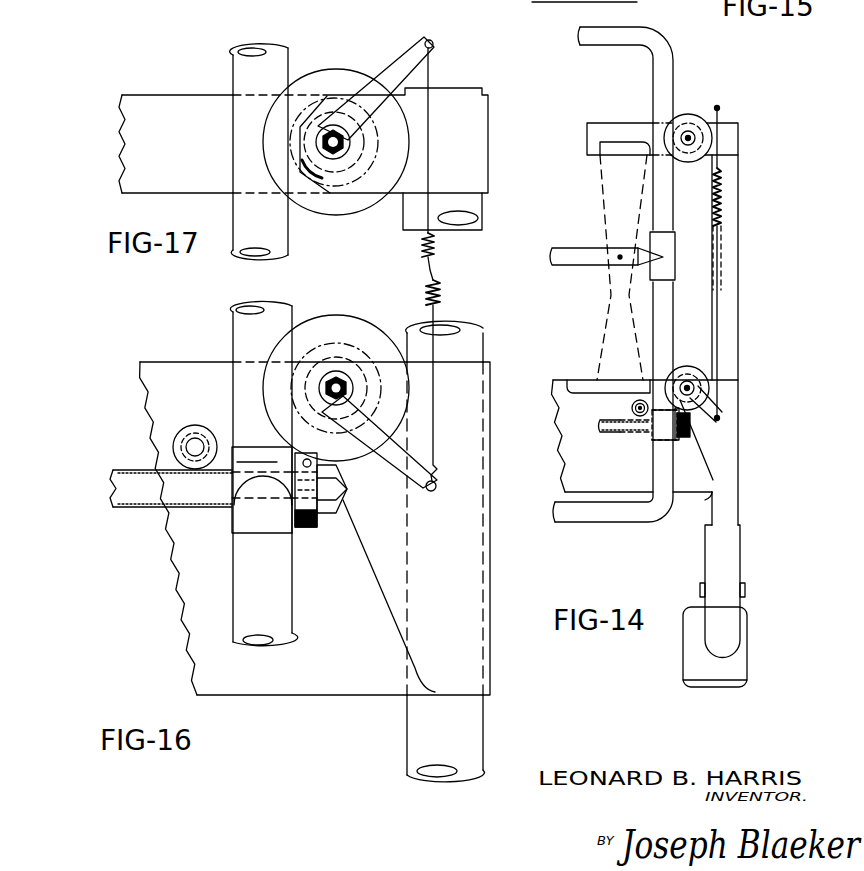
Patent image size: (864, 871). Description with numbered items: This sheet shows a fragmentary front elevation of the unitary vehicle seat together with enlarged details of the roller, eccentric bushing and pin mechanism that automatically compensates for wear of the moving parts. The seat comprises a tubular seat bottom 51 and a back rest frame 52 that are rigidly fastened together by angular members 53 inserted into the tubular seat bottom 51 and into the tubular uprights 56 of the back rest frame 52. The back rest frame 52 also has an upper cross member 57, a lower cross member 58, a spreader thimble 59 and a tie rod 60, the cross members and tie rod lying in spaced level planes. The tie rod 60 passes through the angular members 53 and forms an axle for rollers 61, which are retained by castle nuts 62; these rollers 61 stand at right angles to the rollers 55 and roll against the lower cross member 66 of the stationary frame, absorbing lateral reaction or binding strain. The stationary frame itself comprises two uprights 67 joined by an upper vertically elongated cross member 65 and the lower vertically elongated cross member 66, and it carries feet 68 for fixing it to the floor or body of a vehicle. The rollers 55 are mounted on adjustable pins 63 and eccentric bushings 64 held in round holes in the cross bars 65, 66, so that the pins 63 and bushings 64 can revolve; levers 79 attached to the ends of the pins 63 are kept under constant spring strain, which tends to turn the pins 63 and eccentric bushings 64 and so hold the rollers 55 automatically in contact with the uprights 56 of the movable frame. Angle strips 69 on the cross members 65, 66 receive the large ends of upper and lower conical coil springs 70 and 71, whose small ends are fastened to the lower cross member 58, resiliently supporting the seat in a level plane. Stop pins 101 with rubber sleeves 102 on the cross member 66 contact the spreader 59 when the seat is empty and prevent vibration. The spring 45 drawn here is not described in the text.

In FIG. 16, the spring 45 is at (436, 289).
In FIG. 14, the spring 45 is at (713, 330).
In FIG. 16, the tubular seat bottom 51 is at (288, 590).
In FIG. 14, the tubular seat bottom 51 is at (610, 515).
In FIG. 14, the back rest frame 52 is at (626, 75).
In FIG. 16, the angular members 53 is at (270, 455).
In FIG. 14, the angular members 53 is at (652, 437).
In FIG. 17, the rollers 55 is at (325, 73).
In FIG. 16, the rollers 55 is at (317, 323).
In FIG. 14, the rollers 55 is at (677, 128).
In FIG. 17, the tubular uprights 56 is at (270, 65).
In FIG. 16, the tubular uprights 56 is at (237, 343).
In FIG. 14, the tubular uprights 56 is at (687, 287).
In FIG. 14, the upper cross member 57 is at (628, 35).
In FIG. 14, the lower cross member 58 is at (572, 260).
In FIG. 16, the spreader thimble 59 is at (153, 510).
In FIG. 14, the spreader thimble 59 is at (627, 435).
In FIG. 16, the tie rod 60 is at (170, 487).
In FIG. 14, the tie rod 60 is at (602, 428).
In FIG. 16, the rollers 61 is at (307, 527).
In FIG. 14, the rollers 61 is at (682, 437).
In FIG. 16, the castle nuts 62 is at (323, 505).
In FIG. 14, the castle nuts 62 is at (687, 428).
In FIG. 17, the adjustable pins 63 is at (343, 143).
In FIG. 16, the adjustable pins 63 is at (338, 380).
In FIG. 14, the adjustable pins 63 is at (692, 140).
In FIG. 17, the eccentric bushings 64 is at (348, 137).
In FIG. 16, the eccentric bushings 64 is at (337, 392).
In FIG. 14, the eccentric bushings 64 is at (693, 135).
In FIG. 17, the upper vertically elongated cross member 65 is at (188, 107).
In FIG. 14, the upper vertically elongated cross member 65 is at (592, 132).
In FIG. 16, the lower vertically elongated cross member 66 is at (197, 570).
In FIG. 14, the lower vertically elongated cross member 66 is at (577, 462).
In FIG. 17, the uprights 67 is at (405, 215).
In FIG. 16, the uprights 67 is at (418, 710).
In FIG. 14, the uprights 67 is at (733, 197).
In FIG. 14, the feet 68 is at (733, 608).
In FIG. 14, the angle strips 69 is at (600, 157).
In FIG. 14, the upper conical coil springs 70 is at (622, 190).
In FIG. 14, the lower conical coil springs 71 is at (620, 302).
In FIG. 17, the levers 79 is at (433, 43).
In FIG. 16, the levers 79 is at (398, 453).
In FIG. 14, the levers 79 is at (701, 433).
In FIG. 16, the stop pins 101 is at (190, 445).
In FIG. 14, the stop pins 101 is at (633, 412).
In FIG. 16, the rubber sleeves 102 is at (197, 428).
In FIG. 14, the rubber sleeves 102 is at (638, 404).